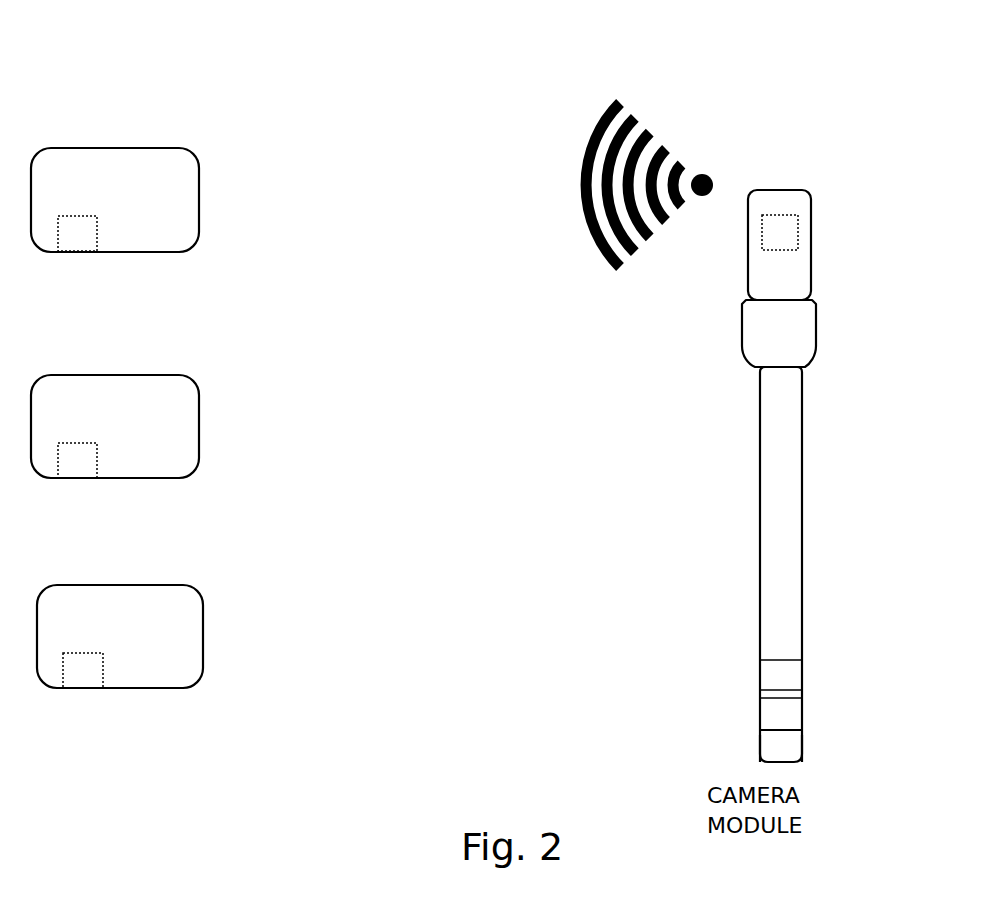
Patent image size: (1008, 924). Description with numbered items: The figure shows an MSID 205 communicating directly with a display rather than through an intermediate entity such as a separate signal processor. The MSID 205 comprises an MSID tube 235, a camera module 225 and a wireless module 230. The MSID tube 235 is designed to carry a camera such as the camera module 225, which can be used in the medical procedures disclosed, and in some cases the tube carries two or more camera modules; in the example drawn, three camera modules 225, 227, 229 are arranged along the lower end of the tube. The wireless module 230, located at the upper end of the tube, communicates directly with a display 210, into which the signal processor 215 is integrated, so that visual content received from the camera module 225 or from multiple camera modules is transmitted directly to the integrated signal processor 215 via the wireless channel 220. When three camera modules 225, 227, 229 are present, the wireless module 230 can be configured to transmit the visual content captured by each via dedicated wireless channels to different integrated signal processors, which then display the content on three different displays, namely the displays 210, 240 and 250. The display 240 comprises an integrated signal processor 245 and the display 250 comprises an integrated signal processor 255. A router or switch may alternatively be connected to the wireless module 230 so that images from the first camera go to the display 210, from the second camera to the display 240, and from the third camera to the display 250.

The MSID 205 is at (714, 147).
The display 210 is at (180, 237).
The integrated signal processor 215 is at (75, 240).
The wireless channel 220 is at (615, 270).
The camera module 225 is at (785, 748).
The camera module 227 is at (787, 717).
The camera module 229 is at (775, 680).
The wireless module 230 is at (778, 215).
The MSID tube 235 is at (755, 428).
The display 240 is at (173, 462).
The integrated signal processor 245 is at (70, 468).
The display 250 is at (180, 675).
The integrated signal processor 255 is at (75, 680).